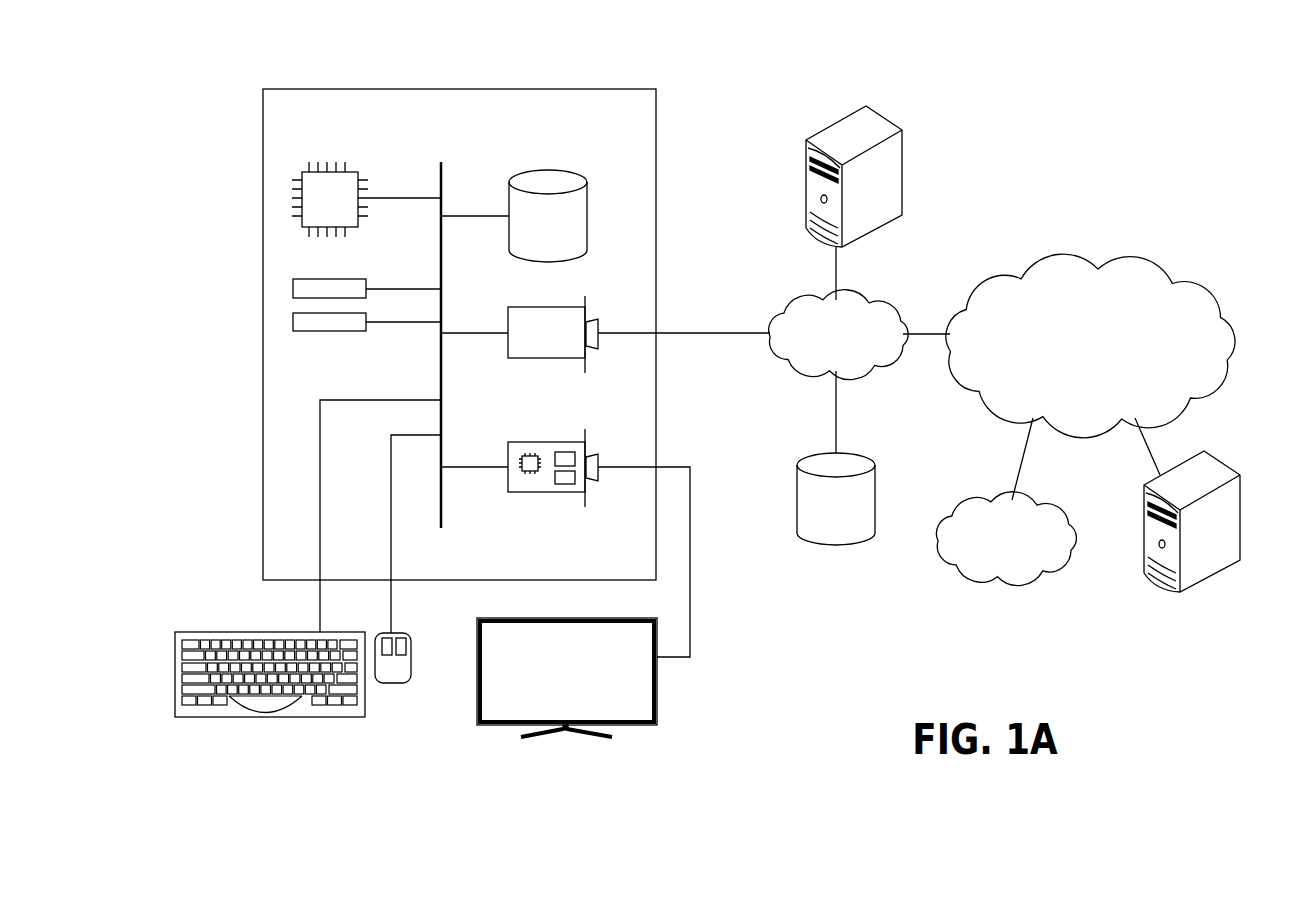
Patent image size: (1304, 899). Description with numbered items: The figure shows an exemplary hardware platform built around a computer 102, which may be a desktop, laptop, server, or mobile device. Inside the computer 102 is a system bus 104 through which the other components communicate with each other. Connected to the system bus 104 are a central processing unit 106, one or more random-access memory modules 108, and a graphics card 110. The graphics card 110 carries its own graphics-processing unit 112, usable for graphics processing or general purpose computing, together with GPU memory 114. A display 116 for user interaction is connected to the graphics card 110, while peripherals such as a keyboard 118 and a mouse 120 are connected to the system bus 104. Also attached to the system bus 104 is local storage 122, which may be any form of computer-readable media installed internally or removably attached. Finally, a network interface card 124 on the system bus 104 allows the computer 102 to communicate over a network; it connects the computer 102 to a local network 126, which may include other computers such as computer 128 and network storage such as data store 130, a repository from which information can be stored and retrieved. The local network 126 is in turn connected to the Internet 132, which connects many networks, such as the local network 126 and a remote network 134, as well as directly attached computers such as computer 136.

The computer 102 is at (614, 88).
The system bus 104 is at (442, 172).
The central processing unit 106 is at (349, 166).
The random-access memory modules 108 is at (366, 318).
The graphics card 110 is at (508, 452).
The graphics-processing unit 112 is at (529, 474).
The GPU memory 114 is at (564, 488).
The display 116 is at (657, 706).
The keyboard 118 is at (271, 718).
The mouse 120 is at (392, 683).
The local storage 122 is at (590, 200).
The network interface card 124 is at (508, 320).
The local network 126 is at (897, 297).
The computer 128 is at (887, 118).
The data store 130 is at (870, 458).
The Internet 132 is at (1138, 260).
The remote network 134 is at (1060, 500).
The computer 136 is at (1222, 458).